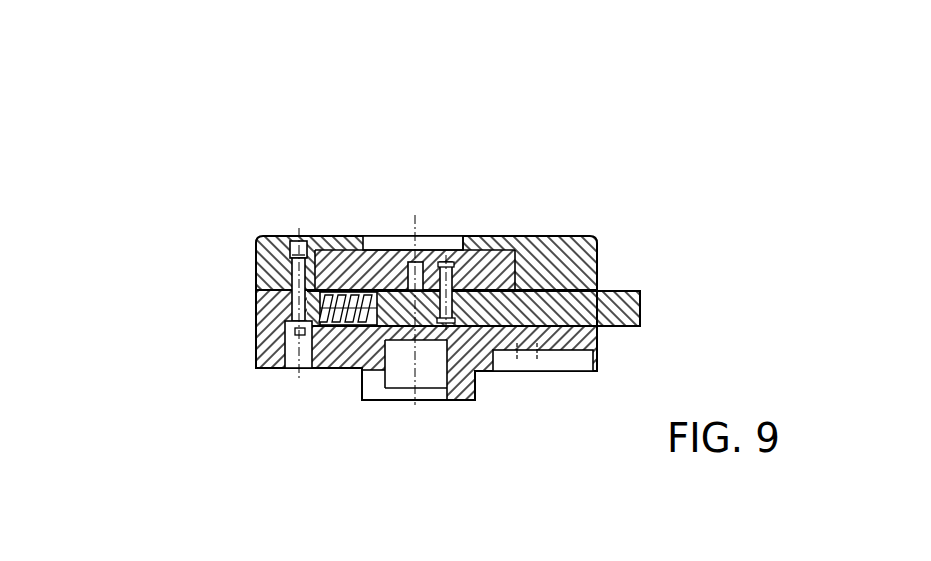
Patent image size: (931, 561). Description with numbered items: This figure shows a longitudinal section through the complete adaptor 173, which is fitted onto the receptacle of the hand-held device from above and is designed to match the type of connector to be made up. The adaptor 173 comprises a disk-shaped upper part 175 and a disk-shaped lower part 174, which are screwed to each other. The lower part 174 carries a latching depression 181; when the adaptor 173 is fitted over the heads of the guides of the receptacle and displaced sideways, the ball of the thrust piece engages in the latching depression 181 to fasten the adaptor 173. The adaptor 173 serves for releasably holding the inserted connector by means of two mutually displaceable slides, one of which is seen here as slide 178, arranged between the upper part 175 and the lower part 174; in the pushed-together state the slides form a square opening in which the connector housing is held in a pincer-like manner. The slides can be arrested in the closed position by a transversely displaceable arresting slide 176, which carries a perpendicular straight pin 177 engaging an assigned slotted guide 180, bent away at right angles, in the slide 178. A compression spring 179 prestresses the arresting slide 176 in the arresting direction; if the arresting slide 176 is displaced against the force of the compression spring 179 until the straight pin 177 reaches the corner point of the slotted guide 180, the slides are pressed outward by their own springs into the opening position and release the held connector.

The adaptor 173 is at (666, 239).
The lower part 174 is at (333, 272).
The upper part 175 is at (205, 220).
The arresting slide 176 is at (396, 162).
The straight pin 177 is at (432, 180).
The slide 178 is at (499, 258).
The compression spring 179 is at (338, 316).
The slotted guide 180 is at (390, 361).
The latching depression 181 is at (572, 350).